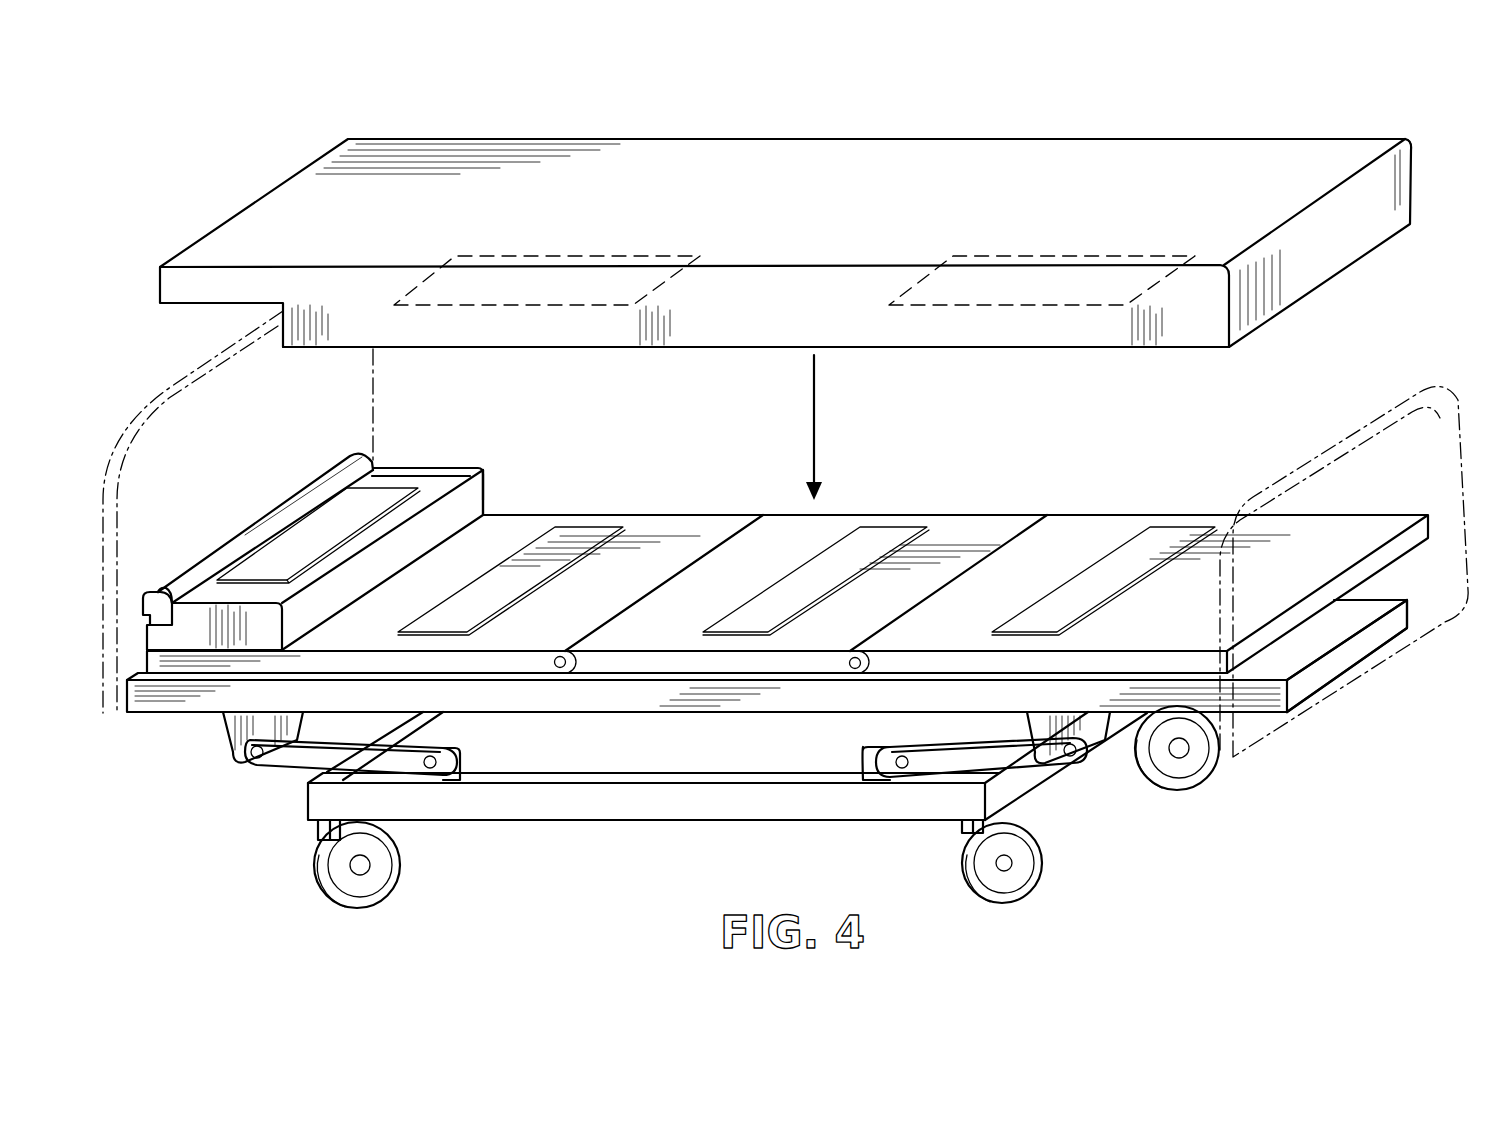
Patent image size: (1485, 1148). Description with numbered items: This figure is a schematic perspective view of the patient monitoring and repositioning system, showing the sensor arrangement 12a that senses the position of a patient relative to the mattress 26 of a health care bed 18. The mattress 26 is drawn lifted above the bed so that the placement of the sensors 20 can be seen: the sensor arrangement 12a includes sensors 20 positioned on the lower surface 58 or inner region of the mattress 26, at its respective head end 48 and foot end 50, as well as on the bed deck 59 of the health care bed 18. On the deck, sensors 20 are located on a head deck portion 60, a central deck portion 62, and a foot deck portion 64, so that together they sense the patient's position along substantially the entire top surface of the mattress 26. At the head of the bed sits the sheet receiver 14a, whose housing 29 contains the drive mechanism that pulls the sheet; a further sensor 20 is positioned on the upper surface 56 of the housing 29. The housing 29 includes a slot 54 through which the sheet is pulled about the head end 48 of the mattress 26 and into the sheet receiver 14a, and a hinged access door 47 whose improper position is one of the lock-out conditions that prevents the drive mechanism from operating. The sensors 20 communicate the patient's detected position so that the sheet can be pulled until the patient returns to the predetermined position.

The head end 48 is at (279, 160).
The foot end 50 is at (1366, 131).
The mattress 26 is at (830, 211).
The lower surface 58 is at (753, 351).
The sensors 20 is at (541, 306).
The sensor arrangement 12a is at (1378, 330).
The sheet receiver 14a is at (336, 527).
The upper surface 56 is at (395, 470).
The hinged access door 47 is at (437, 473).
The housing 29 is at (484, 493).
The slot 54 is at (148, 620).
The bed deck 59 is at (731, 513).
The head deck portion 60 is at (490, 663).
The central deck portion 62 is at (655, 664).
The foot deck portion 64 is at (1265, 698).
The health care bed 18 is at (1166, 834).